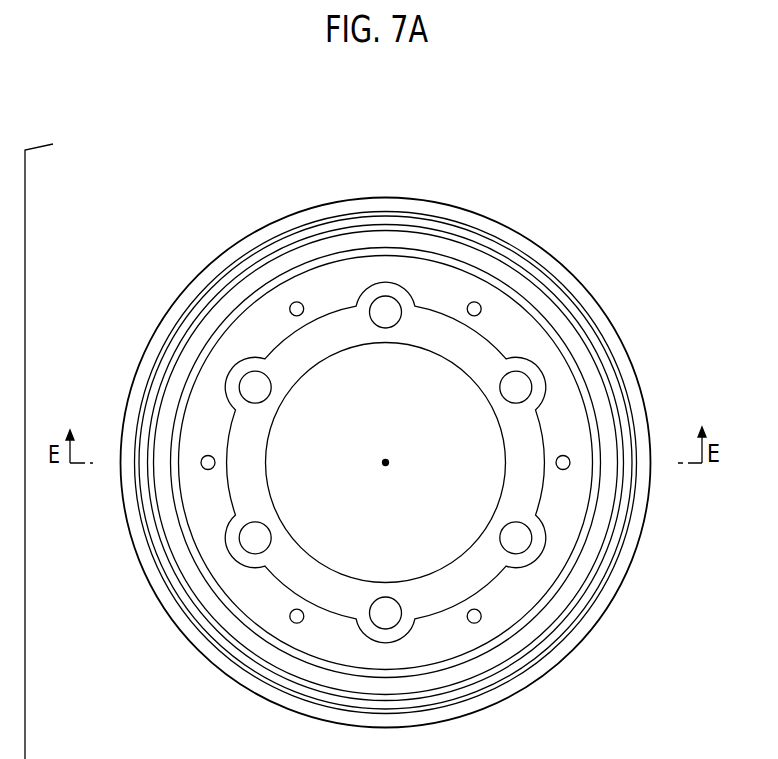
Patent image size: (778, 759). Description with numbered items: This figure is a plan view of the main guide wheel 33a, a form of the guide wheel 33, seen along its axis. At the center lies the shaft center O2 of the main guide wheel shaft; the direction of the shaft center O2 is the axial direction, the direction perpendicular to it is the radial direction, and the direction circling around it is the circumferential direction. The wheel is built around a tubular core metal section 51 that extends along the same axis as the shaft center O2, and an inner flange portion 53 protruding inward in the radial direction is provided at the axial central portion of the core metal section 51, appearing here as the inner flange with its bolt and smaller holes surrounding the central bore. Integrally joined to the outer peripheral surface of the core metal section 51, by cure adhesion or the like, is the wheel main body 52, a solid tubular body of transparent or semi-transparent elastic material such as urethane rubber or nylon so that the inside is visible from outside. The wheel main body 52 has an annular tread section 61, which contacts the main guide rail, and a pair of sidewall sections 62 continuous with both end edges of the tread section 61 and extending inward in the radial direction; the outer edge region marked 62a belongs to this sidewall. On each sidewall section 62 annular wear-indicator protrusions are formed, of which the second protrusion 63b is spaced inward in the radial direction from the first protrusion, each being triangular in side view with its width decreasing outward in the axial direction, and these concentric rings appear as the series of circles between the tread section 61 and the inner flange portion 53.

The guide wheel 33 is at (417, 441).
The main guide wheel 33a is at (417, 441).
The core metal section 51 is at (515, 323).
The wheel main body 52 is at (533, 239).
The inner flange portion 53 is at (522, 487).
The tread section 61 is at (622, 340).
The sidewall section 62 is at (602, 315).
The rim groove edge 62a is at (623, 380).
The second protrusion 63b is at (612, 403).
The shaft center O2 is at (389, 461).